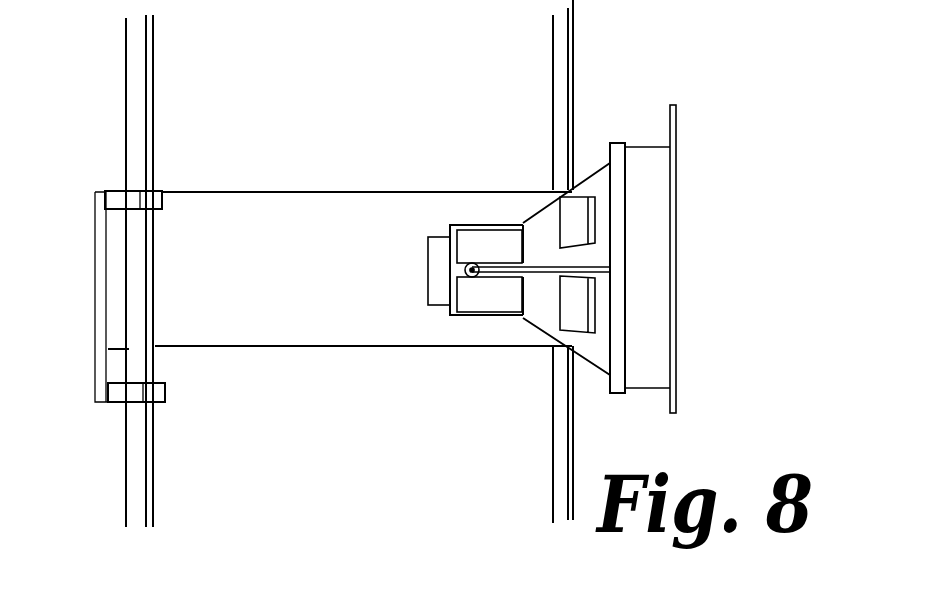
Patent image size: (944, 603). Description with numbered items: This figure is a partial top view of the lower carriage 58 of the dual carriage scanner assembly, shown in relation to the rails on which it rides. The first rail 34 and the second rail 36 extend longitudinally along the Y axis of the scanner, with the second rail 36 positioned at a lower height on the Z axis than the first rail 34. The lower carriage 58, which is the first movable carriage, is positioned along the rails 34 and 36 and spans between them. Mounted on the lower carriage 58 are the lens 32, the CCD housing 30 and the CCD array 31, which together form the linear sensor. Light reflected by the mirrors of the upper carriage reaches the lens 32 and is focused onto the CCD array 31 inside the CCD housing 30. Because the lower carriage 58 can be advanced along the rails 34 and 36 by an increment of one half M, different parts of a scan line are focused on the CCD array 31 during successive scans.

The CCD housing 30 is at (604, 118).
The CCD array 31 is at (647, 187).
The lens 32 is at (438, 247).
The first rail 34 is at (137, 53).
The second rail 36 is at (560, 45).
The lower carriage 58 is at (249, 235).